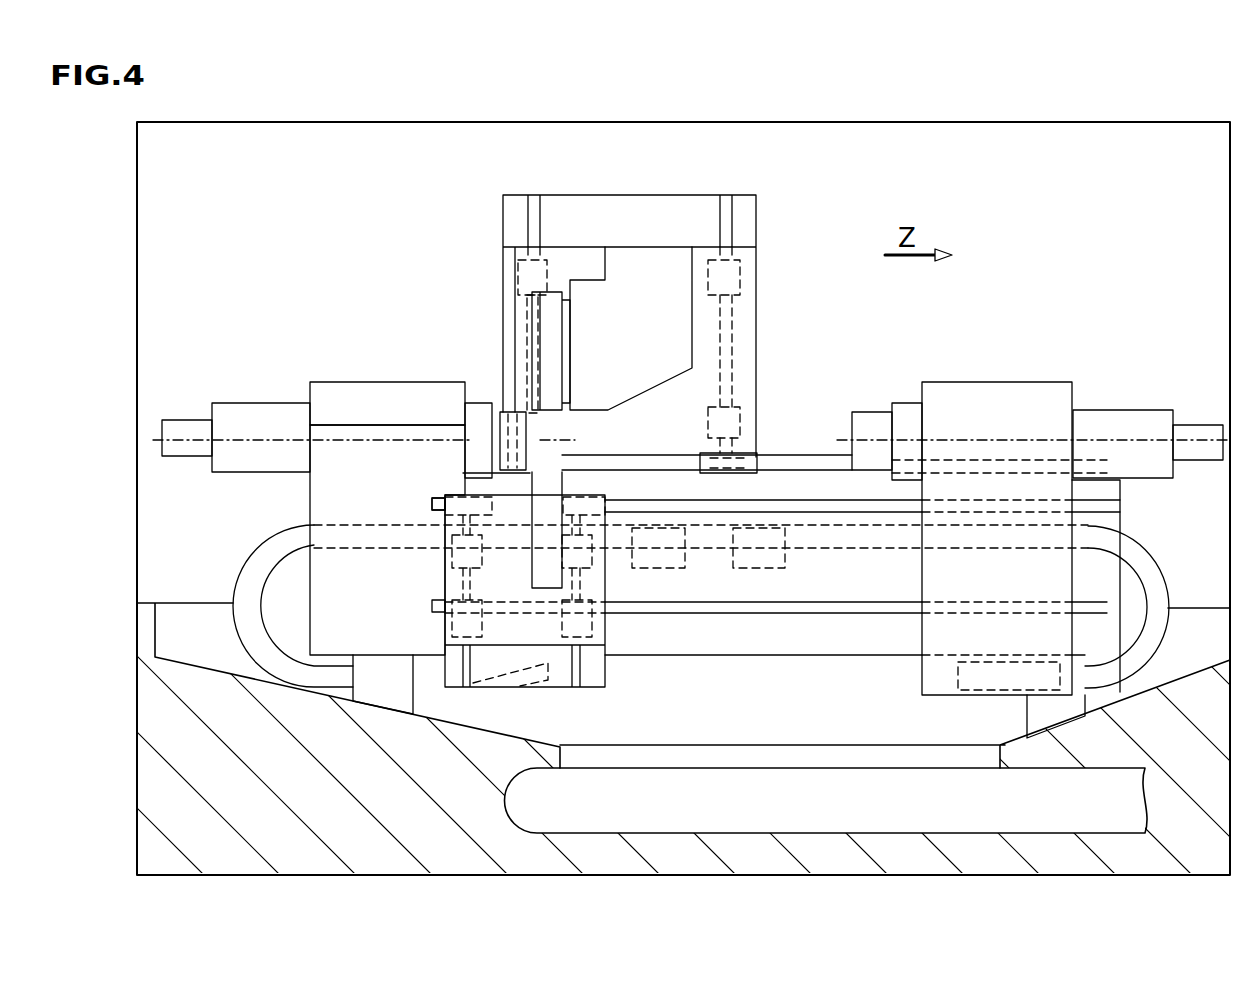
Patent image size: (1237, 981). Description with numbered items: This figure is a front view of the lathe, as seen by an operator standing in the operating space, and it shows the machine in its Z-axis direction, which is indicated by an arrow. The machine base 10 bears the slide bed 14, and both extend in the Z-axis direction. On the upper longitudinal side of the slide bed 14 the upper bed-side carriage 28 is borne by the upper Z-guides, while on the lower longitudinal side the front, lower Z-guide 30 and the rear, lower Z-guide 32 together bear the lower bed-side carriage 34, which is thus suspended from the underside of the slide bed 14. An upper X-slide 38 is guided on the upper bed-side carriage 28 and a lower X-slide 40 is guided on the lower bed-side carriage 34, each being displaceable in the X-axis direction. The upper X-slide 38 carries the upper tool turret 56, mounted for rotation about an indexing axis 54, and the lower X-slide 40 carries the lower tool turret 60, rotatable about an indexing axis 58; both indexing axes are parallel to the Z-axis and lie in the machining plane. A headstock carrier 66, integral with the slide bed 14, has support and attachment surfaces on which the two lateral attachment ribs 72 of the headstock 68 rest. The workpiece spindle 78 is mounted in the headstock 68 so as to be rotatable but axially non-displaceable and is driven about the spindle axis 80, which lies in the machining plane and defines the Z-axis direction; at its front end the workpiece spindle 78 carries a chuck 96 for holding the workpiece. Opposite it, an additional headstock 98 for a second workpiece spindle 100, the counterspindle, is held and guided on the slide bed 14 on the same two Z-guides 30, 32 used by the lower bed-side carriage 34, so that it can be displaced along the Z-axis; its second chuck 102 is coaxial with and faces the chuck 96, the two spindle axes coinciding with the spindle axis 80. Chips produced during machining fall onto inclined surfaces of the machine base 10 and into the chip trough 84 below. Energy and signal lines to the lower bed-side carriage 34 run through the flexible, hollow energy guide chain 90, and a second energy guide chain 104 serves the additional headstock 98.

The machine base 10 is at (126, 780).
The slide bed 14 is at (1126, 511).
The upper bed-side carriage 28 is at (762, 198).
The front, lower Z-guide 30 is at (712, 507).
The rear, lower Z-guide 32 is at (737, 608).
The lower bed-side carriage 34 is at (616, 682).
The upper X-slide 38 is at (555, 240).
The lower X-slide 40 is at (552, 652).
The indexing axis 54 is at (530, 322).
The upper tool turret 56 is at (541, 294).
The indexing axis 58 is at (530, 540).
The lower tool turret 60 is at (532, 588).
The headstock carrier 66 is at (323, 487).
The headstock 68 is at (312, 374).
The lateral attachment ribs 72 is at (383, 430).
The workpiece spindle 78 is at (208, 398).
The spindle axis 80 is at (258, 438).
The chip trough 84 is at (818, 766).
The energy guide chain 90 is at (248, 567).
The chuck 96 is at (514, 410).
The additional headstock 98 is at (978, 377).
The second workpiece spindle 100 is at (1119, 404).
The second chuck 102 is at (877, 410).
The second energy guide chain 104 is at (1155, 584).